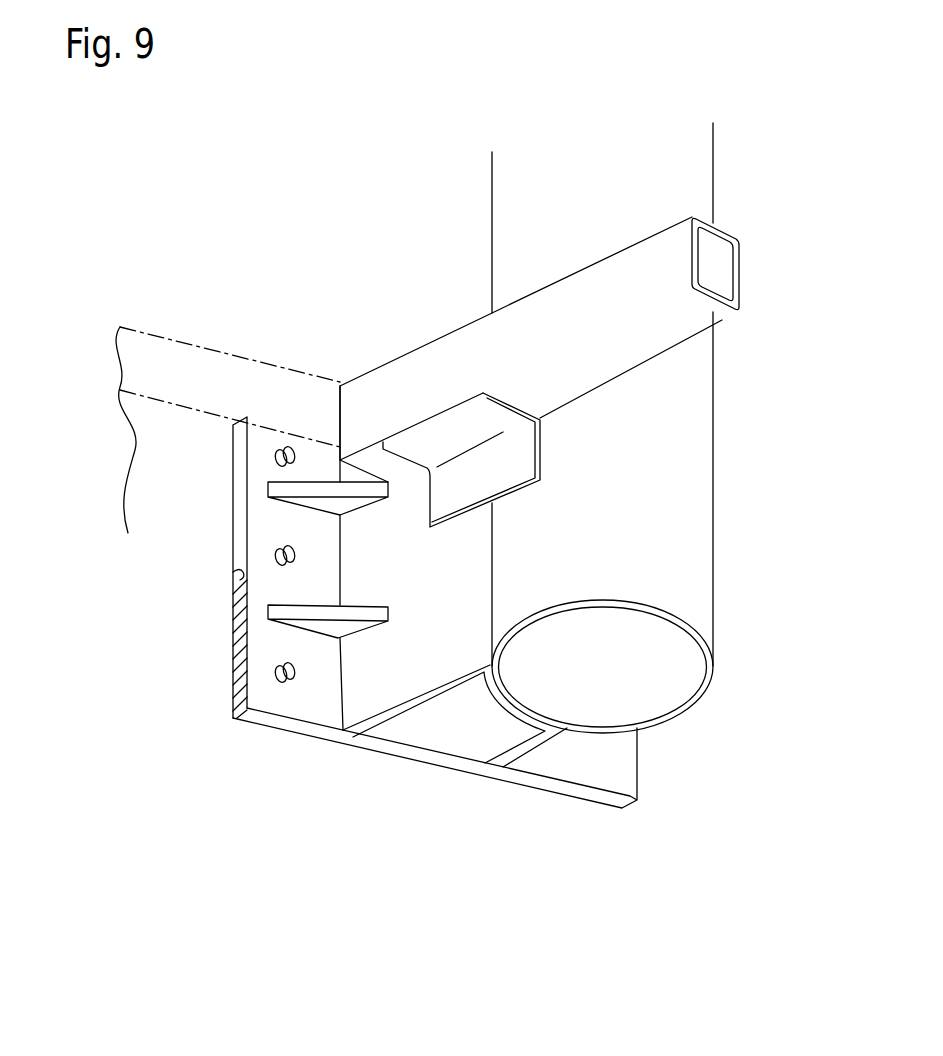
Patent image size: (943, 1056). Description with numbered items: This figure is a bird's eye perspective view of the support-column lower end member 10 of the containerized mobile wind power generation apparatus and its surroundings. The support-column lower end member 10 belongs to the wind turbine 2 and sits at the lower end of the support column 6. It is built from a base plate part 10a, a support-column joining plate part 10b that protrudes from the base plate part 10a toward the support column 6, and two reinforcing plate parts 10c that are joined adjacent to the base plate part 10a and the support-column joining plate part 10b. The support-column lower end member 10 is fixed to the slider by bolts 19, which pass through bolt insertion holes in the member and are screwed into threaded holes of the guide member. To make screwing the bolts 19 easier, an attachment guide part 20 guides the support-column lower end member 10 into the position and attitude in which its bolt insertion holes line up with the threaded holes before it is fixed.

The wind turbine 2 is at (161, 420).
The support column 6 is at (660, 407).
The support-column lower end member 10 is at (83, 875).
The base plate part 10a is at (323, 712).
The support-column joining plate part 10b is at (413, 700).
The reinforcing plate parts 10c is at (307, 488).
The bolts 19 is at (277, 456).
The attachment guide part 20 is at (273, 557).